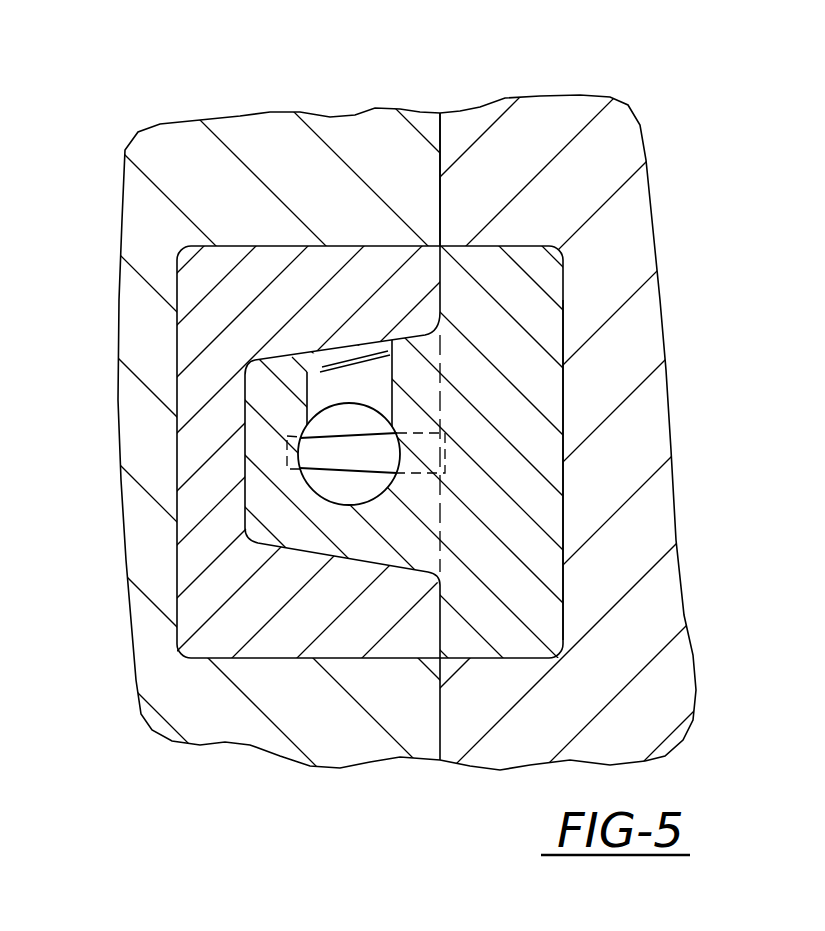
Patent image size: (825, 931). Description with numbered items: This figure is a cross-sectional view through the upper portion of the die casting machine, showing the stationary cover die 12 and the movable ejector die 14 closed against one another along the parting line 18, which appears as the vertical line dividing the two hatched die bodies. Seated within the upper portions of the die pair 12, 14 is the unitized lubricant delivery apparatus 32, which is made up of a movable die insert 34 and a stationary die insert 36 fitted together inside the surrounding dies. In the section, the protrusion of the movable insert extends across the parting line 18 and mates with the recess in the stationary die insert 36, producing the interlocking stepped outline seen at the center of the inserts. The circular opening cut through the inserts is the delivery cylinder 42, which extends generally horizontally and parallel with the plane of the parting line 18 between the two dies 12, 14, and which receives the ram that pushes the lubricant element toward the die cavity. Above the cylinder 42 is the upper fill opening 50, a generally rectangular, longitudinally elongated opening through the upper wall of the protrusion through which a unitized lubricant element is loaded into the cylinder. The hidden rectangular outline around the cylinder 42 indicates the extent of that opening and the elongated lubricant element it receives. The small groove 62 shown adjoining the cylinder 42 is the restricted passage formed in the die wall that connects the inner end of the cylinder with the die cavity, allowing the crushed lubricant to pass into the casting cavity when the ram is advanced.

The stationary cover die 12 is at (412, 465).
The movable ejector die 14 is at (412, 465).
The parting line 18 is at (474, 309).
The unitized lubricant delivery apparatus 32 is at (412, 465).
The movable die insert 34 is at (654, 470).
The stationary die insert 36 is at (412, 465).
The delivery cylinder 42 is at (317, 500).
The upper fill opening 50 is at (351, 231).
The groove 62 is at (350, 477).